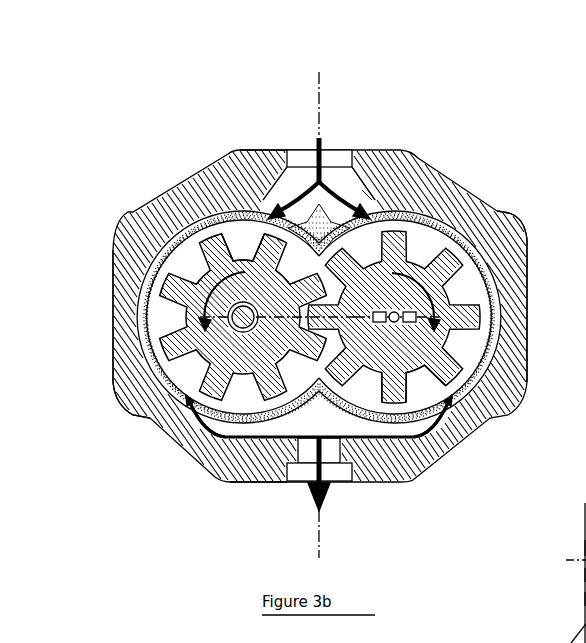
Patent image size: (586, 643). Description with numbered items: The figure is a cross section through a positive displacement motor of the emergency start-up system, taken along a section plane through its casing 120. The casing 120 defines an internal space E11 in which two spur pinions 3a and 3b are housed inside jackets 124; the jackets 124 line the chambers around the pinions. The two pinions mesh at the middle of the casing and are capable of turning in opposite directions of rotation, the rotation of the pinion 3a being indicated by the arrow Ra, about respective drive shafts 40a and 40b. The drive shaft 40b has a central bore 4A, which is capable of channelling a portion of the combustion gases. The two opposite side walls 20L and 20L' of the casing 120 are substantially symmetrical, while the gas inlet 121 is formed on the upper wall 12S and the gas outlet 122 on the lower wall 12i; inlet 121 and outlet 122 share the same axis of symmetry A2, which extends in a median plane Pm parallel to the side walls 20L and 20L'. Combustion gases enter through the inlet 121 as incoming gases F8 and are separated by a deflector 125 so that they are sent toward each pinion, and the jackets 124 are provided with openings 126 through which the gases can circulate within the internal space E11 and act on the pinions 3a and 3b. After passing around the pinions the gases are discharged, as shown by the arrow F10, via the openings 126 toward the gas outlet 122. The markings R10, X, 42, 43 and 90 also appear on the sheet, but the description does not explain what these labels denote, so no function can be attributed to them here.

The casing 120 is at (470, 176).
The gas inlet 121 is at (332, 156).
The gas outlet 122 is at (296, 483).
The jackets 124 is at (472, 215).
The deflector 125 is at (372, 190).
The openings 126 is at (238, 236).
The upper wall 12S is at (268, 142).
The lower wall 12i is at (262, 493).
The spur pinion 3a is at (217, 227).
The spur pinion 3b is at (452, 400).
The central bore 4A is at (390, 394).
The drive shaft 40a is at (219, 440).
The drive shaft 40b is at (427, 417).
The side wall 20L is at (85, 316).
The side wall 20L' is at (552, 311).
The direction of rotation Ra is at (200, 227).
The bore radius second chamber R10 is at (444, 272).
The axis of symmetry A2 is at (317, 263).
The internal space E11 is at (382, 195).
The incoming gases F8 is at (310, 185).
The discharged gases F10 is at (322, 462).
The median plane Pm is at (317, 95).
The axis X is at (515, 562).
The element 42 is at (585, 549).
The element 43 is at (585, 576).
The element 90 is at (585, 600).